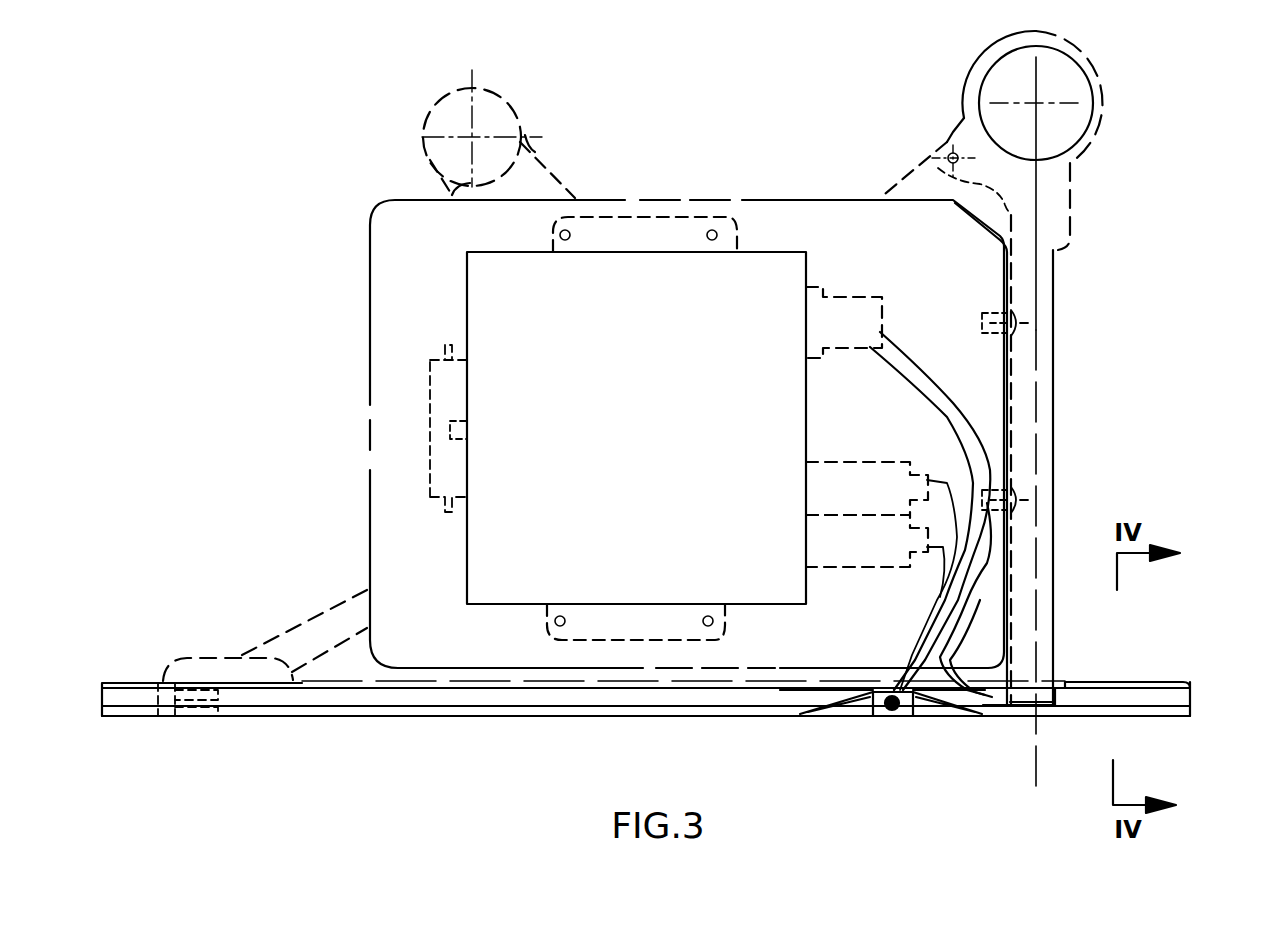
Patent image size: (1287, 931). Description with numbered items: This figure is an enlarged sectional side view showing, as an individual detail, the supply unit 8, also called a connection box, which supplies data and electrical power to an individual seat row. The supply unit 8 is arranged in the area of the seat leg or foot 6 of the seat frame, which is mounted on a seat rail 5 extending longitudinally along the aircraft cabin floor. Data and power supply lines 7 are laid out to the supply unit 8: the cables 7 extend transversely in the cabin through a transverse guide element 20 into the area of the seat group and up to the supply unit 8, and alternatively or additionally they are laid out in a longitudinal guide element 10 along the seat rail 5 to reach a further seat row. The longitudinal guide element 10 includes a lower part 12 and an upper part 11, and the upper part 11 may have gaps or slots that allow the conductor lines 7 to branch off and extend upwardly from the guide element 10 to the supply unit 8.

The seat rail 5 is at (1162, 683).
The seat leg or foot 6 is at (327, 622).
The data and power supply lines 7 is at (962, 585).
The supply unit 8 is at (362, 392).
The longitudinal guide element 10 is at (447, 695).
The upper part 11 is at (1178, 697).
The lower part 12 is at (134, 719).
The transverse guide element 20 is at (853, 707).